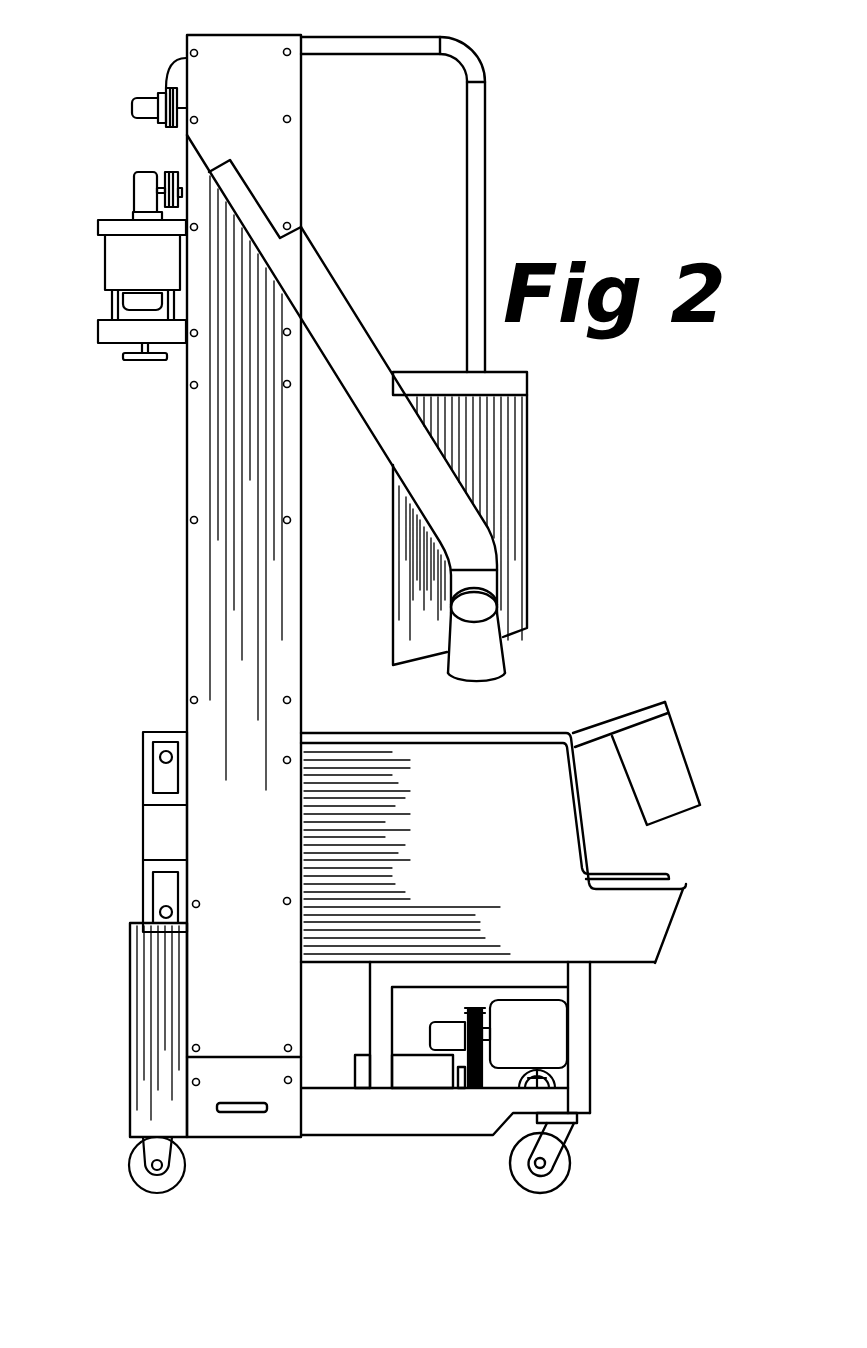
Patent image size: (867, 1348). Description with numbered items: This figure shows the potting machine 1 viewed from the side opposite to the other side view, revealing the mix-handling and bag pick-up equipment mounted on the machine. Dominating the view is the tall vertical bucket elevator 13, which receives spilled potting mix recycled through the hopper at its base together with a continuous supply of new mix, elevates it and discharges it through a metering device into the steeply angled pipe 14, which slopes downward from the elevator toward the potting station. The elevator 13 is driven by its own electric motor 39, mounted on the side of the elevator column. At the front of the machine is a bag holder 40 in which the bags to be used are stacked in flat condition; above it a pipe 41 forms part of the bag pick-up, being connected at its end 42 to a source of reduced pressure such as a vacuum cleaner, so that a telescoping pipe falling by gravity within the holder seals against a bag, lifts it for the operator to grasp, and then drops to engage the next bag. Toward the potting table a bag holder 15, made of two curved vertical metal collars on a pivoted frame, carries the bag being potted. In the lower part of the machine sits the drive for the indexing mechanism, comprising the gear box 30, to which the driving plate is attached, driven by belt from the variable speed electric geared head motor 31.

The machine 1 is at (612, 565).
The vertical bucket elevator 13 is at (200, 625).
The steeply angled pipe 14 is at (343, 313).
The bag holder 15 is at (665, 760).
The gear box 30 is at (427, 1075).
The variable speed electric geared head motor 31 is at (548, 1042).
The electric motor 39 is at (115, 262).
The bag holder 40 is at (513, 478).
The pipe 41 is at (413, 41).
The end of pipe 42 is at (173, 75).